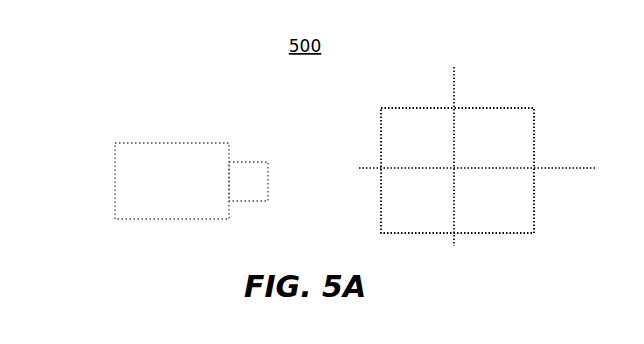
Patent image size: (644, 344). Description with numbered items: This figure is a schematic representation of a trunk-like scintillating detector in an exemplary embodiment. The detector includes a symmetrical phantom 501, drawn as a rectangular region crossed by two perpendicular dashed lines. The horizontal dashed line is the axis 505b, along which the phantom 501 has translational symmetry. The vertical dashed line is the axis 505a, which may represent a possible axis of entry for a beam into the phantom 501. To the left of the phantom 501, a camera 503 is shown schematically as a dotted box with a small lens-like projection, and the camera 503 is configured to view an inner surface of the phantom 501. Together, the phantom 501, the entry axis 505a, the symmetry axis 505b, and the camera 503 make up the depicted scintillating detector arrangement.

The symmetrical phantom 501 is at (503, 135).
The camera 503 is at (131, 188).
The axis 505a is at (454, 67).
The axis 505b is at (572, 169).